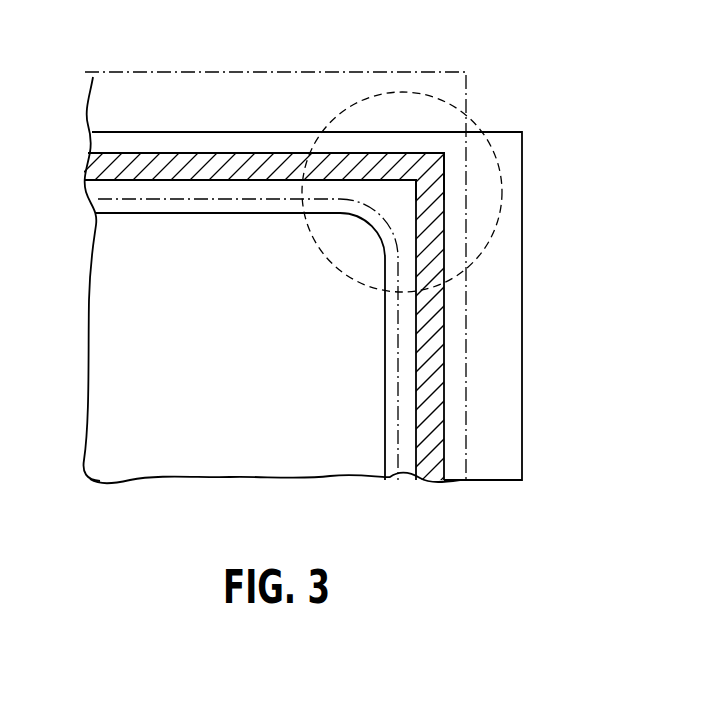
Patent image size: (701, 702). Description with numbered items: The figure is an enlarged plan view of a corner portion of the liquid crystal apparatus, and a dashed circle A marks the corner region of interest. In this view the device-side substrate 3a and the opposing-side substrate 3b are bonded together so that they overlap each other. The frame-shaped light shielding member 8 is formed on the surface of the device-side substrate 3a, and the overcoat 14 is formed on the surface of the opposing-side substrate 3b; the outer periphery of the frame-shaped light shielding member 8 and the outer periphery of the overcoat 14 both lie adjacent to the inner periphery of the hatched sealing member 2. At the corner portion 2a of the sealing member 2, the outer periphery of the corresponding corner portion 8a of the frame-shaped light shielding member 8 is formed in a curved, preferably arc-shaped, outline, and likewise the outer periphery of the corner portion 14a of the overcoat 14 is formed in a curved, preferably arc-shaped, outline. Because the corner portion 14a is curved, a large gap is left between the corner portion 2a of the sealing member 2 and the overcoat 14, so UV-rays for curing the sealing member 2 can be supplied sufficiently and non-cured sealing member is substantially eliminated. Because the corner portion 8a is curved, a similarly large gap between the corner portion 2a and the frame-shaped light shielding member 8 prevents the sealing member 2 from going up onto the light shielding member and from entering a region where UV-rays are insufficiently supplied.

The sealing member 2 is at (152, 158).
The corner portion of the sealing member 2a is at (436, 165).
The device-side substrate 3a is at (275, 68).
The opposing-side substrate 3b is at (497, 393).
The frame-shaped light shielding member 8 is at (100, 199).
The corner portion of the frame-shaped light shielding member 8a is at (392, 228).
The overcoat 14 is at (270, 450).
The corner portion of the overcoat 14a is at (370, 222).
The enlarged detail region A is at (393, 92).